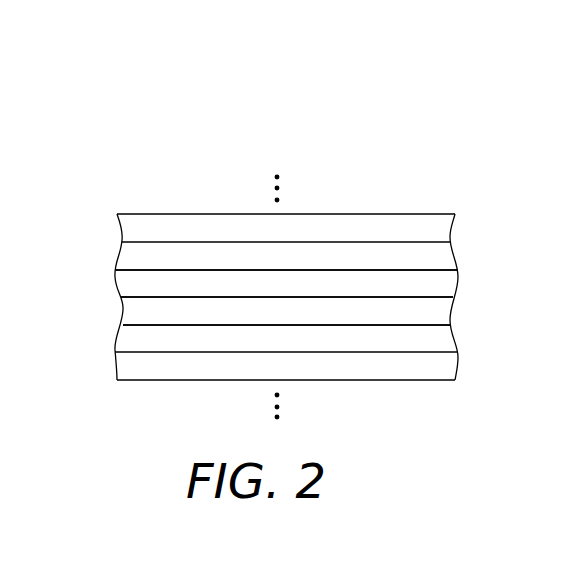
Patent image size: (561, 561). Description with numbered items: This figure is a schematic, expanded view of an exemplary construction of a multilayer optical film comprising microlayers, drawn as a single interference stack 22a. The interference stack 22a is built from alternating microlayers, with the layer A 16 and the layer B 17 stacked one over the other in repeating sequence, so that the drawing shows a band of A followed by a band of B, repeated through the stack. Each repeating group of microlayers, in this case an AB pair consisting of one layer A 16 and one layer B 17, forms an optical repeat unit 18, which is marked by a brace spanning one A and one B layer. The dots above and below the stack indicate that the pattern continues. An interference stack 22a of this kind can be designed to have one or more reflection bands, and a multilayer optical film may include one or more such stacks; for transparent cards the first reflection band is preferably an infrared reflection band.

The interference stack 22a is at (385, 182).
The layer A 16 is at (148, 276).
The layer B 17 is at (137, 308).
The optical repeat unit 18 is at (100, 268).